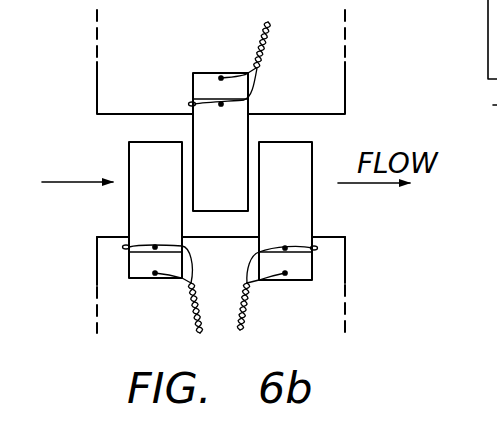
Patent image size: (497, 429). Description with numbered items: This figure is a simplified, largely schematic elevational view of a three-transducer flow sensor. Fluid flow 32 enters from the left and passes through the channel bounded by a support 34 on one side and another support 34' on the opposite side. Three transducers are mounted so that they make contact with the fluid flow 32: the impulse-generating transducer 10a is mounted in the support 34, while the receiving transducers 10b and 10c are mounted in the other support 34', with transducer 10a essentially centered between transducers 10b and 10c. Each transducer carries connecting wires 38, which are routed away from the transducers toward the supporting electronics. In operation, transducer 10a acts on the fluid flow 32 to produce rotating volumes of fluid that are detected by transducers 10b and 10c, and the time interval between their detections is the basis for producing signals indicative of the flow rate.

The impulse-generating transducer 10a is at (193, 125).
The receiving transducer 10b is at (298, 280).
The receiving transducer 10c is at (152, 279).
The fluid flow 32 is at (370, 185).
The support 34 is at (259, 62).
The support 34' is at (263, 286).
The connecting wires 38 is at (262, 51).